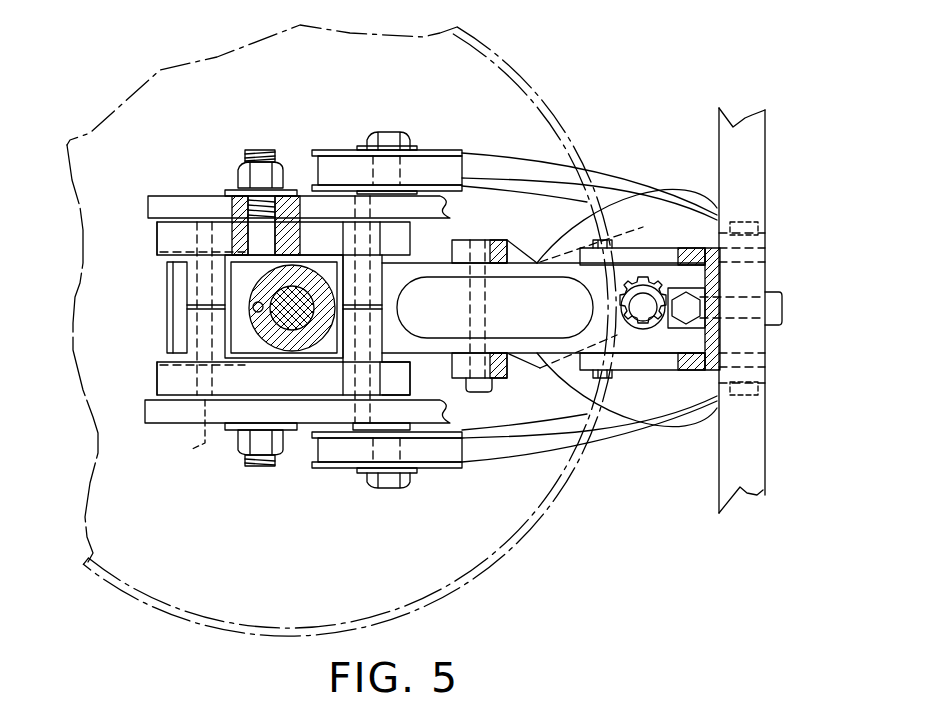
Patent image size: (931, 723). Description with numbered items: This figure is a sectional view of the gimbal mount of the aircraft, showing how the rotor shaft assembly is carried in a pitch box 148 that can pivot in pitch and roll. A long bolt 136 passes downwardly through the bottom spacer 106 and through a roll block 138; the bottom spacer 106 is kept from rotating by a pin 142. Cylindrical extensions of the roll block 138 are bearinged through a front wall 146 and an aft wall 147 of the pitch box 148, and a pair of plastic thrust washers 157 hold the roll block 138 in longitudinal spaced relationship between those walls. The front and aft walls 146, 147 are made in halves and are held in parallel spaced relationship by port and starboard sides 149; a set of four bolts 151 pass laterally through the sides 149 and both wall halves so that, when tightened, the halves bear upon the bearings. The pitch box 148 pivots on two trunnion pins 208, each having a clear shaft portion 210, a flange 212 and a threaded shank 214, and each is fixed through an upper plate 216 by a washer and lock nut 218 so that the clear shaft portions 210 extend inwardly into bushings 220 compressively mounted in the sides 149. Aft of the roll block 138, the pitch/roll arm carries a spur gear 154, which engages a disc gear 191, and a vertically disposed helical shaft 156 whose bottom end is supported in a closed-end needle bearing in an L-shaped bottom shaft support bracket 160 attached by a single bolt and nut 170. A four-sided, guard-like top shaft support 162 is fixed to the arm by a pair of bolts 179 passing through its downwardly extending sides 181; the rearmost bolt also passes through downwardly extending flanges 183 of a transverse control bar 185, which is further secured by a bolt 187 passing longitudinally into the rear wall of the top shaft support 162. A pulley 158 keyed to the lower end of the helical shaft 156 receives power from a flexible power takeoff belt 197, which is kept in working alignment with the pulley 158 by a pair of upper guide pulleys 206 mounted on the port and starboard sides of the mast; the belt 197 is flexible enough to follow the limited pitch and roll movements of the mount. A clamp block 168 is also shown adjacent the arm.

The bottom spacer 106 is at (285, 350).
The long bolt 136 is at (300, 268).
The roll block 138 is at (235, 330).
The pin 142 is at (253, 305).
The front wall 146 is at (182, 280).
The aft wall 147 is at (392, 297).
The pitch box 148 is at (152, 228).
The sides 149 is at (165, 235).
The bolts 151 is at (388, 384).
The spur gear 154 is at (643, 283).
The helical shaft 156 is at (638, 305).
The thrust washers 157 is at (347, 290).
The pulley 158 is at (673, 398).
The bottom shaft support bracket 160 is at (523, 368).
The top shaft support 162 is at (730, 262).
The clamp block 168 is at (492, 378).
The bolt and nut 170 is at (470, 383).
The bolts 179 is at (745, 400).
The downwardly extending sides 181 is at (768, 366).
The downwardly extending flanges 183 is at (768, 383).
The transverse control bar 185 is at (732, 492).
The bolt 187 is at (784, 307).
The disc gear 191 is at (498, 560).
The power takeoff belt 197 is at (340, 170).
The upper guide pulleys 206 is at (430, 152).
The trunnion pins 208 is at (240, 150).
The clear shaft portion 210 is at (235, 200).
The flange 212 is at (305, 208).
The threaded shank 214 is at (262, 150).
The upper plate 216 is at (158, 205).
The washer and lock nut 218 is at (272, 160).
The bushings 220 is at (190, 252).